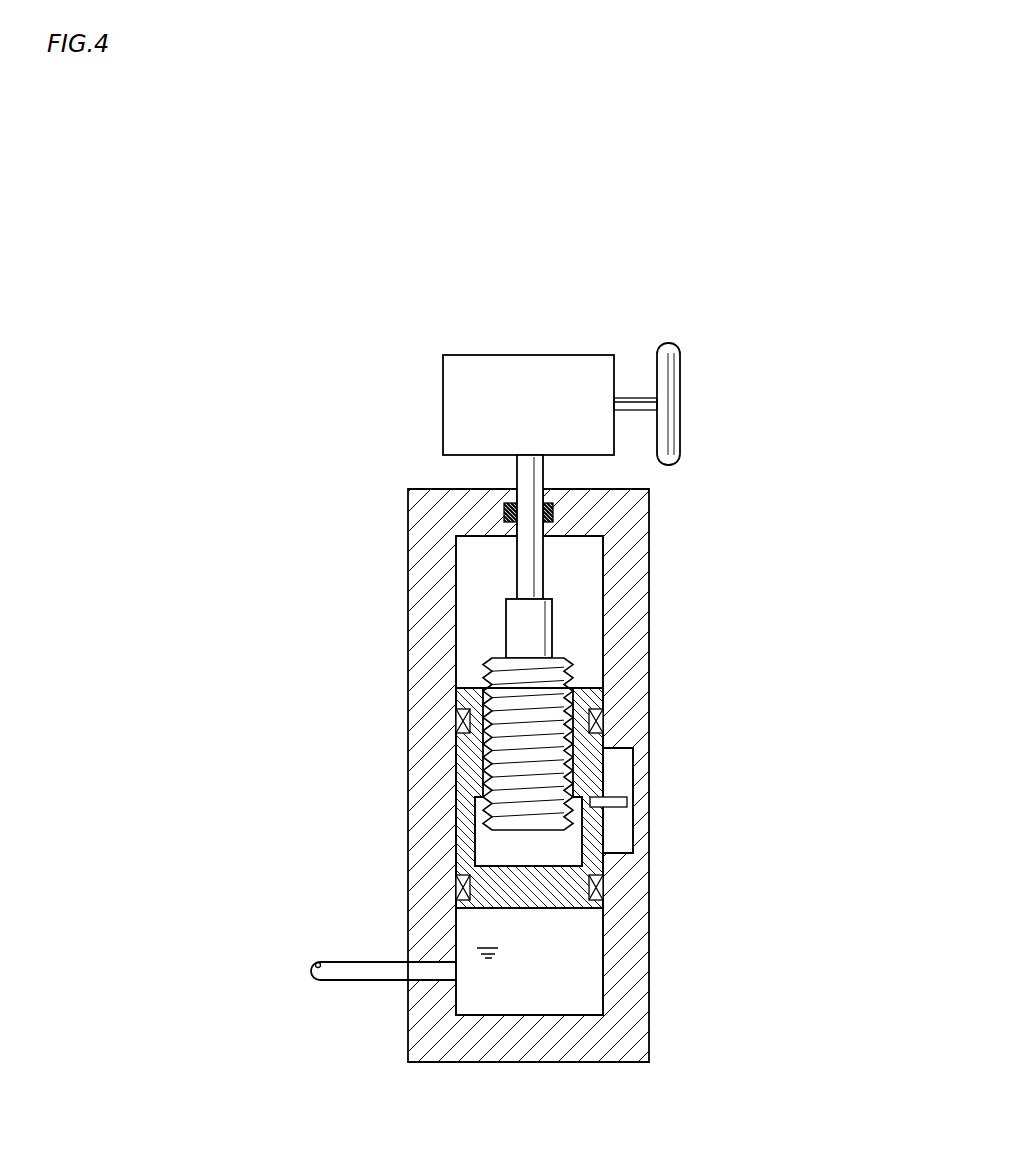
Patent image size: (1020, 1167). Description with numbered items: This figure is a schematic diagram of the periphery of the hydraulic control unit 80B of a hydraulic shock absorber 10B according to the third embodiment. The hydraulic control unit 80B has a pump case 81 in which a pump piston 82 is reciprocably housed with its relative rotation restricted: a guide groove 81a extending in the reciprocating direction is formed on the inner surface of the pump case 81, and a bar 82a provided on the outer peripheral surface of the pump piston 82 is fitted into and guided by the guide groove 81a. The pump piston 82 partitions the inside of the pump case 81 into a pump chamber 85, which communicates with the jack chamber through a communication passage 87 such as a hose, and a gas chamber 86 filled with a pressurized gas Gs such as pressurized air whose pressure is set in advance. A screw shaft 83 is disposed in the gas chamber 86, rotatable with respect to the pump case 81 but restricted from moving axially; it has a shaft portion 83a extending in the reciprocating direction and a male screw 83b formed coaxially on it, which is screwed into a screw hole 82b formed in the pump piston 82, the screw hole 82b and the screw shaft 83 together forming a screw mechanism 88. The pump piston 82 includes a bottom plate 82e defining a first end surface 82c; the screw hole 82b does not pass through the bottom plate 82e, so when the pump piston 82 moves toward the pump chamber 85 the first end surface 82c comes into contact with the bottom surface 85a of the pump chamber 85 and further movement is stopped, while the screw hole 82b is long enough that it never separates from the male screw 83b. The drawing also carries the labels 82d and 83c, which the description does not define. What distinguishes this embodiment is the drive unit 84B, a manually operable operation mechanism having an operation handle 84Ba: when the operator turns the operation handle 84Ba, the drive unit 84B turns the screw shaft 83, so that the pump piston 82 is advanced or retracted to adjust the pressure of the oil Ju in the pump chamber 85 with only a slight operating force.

The hydraulic shock absorber 10B is at (208, 197).
The hydraulic control unit 80B is at (777, 345).
The drive unit 84B is at (543, 354).
The operation handle 84Ba is at (680, 392).
The pump case 81 is at (650, 547).
The guide groove 81a is at (622, 840).
The gas chamber 86 is at (586, 576).
The pressurized gas Gs is at (482, 565).
The pump chamber 85 is at (586, 999).
The bottom surface of the pump chamber 85a is at (518, 1015).
The oil Ju is at (487, 963).
The communication passage 87 is at (350, 973).
The pump piston 82 is at (601, 741).
The bar 82a is at (618, 797).
The screw hole 82b is at (574, 664).
The first end surface 82c is at (570, 908).
The threaded hole 82d is at (550, 710).
The bottom plate 82e is at (563, 885).
The screw shaft 83 is at (553, 637).
The shaft portion 83a is at (520, 620).
The male screw 83b is at (503, 750).
The inner cavity 83c is at (512, 833).
The screw mechanism 88 is at (757, 562).